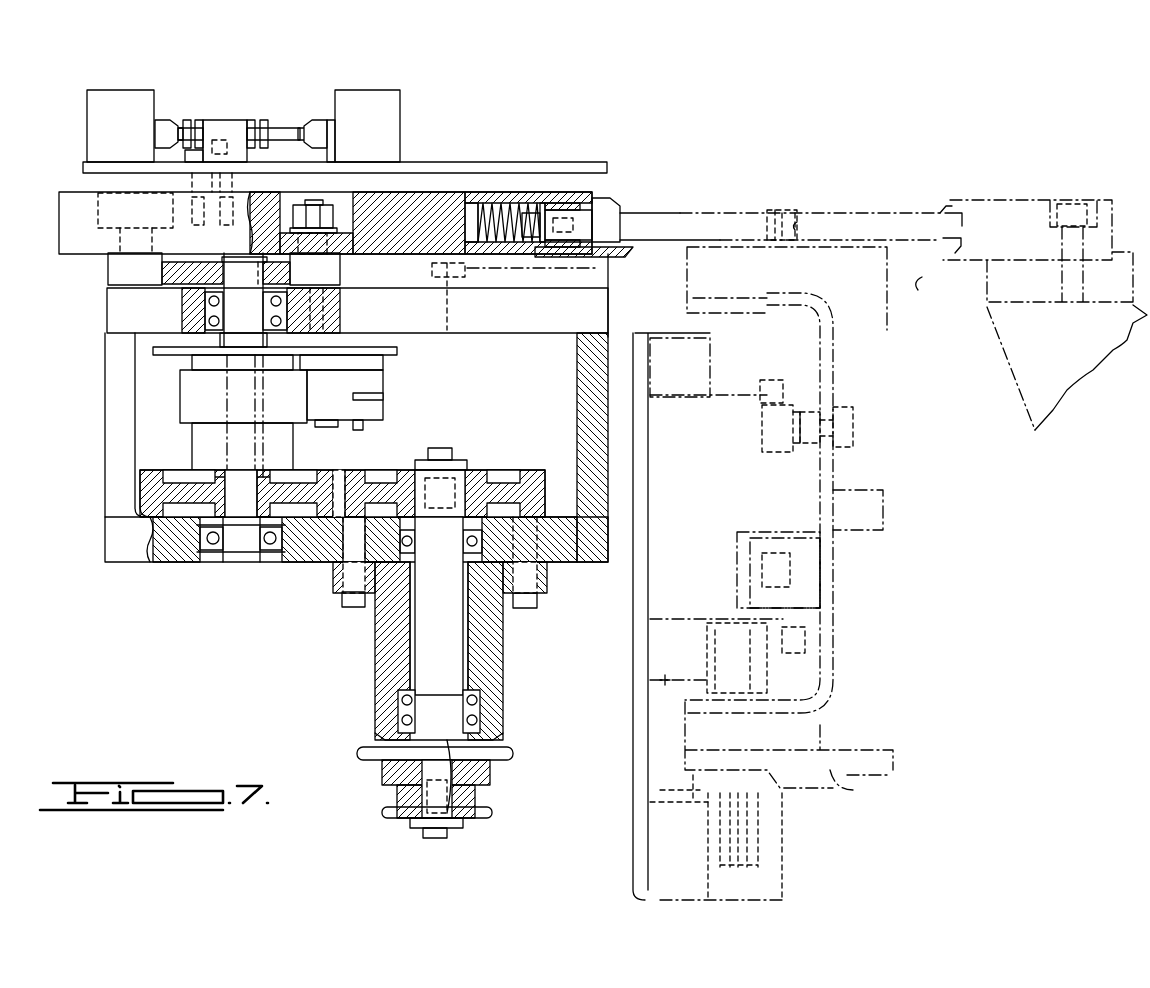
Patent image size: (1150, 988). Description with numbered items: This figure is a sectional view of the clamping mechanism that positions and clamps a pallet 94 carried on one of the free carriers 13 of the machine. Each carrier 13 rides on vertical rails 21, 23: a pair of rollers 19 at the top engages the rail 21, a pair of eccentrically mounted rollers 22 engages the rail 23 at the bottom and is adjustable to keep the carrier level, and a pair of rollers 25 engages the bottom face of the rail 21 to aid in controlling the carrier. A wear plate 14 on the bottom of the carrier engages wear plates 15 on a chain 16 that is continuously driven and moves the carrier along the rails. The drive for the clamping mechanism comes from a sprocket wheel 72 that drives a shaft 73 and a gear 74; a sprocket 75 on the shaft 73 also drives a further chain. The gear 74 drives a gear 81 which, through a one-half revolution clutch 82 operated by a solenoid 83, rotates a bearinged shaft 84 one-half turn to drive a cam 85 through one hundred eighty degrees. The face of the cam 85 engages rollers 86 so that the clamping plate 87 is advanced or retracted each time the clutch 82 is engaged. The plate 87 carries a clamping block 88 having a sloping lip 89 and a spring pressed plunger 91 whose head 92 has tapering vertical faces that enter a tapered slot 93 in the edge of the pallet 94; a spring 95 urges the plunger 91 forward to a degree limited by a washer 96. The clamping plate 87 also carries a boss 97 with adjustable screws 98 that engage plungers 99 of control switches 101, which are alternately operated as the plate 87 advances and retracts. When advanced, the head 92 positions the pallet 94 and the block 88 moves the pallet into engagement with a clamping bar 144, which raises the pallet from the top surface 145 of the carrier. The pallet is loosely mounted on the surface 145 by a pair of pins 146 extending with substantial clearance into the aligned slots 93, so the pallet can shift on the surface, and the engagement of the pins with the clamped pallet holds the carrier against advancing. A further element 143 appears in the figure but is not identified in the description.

The carrier 13 is at (900, 618).
The wear plate 14 is at (875, 792).
The wear plates 15 is at (647, 784).
The chain 16 is at (740, 838).
The rollers 19 is at (727, 330).
The rail 21 is at (763, 397).
The eccentrically mounted rollers 22 is at (710, 673).
The rail 23 is at (657, 700).
The rollers 25 is at (763, 442).
The sprocket wheel 72 is at (500, 753).
The shaft 73 is at (450, 670).
The gear 74 is at (473, 475).
The sprocket 75 is at (473, 817).
The gear 81 is at (300, 472).
The one-half revolution clutch 82 is at (187, 390).
The solenoid 83 is at (350, 412).
The bearinged shaft 84 is at (240, 533).
The cam 85 is at (180, 283).
The rollers 86 is at (123, 270).
The clamping plate 87 is at (407, 207).
The clamping block 88 is at (612, 200).
The sloping lip 89 is at (635, 236).
The spring pressed plunger 91 is at (580, 232).
The head 92 is at (610, 199).
The tapered slot 93 is at (797, 226).
The pallet 94 is at (703, 212).
The spring 95 is at (490, 203).
The washer 96 is at (543, 202).
The boss 97 is at (220, 127).
The adjustable screws 98 is at (187, 125).
The plungers 99 is at (177, 128).
The control switches 101 is at (87, 117).
The cutter 143 is at (948, 295).
The clamping bar 144 is at (1010, 210).
The top surface 145 is at (877, 240).
The pins 146 is at (782, 215).